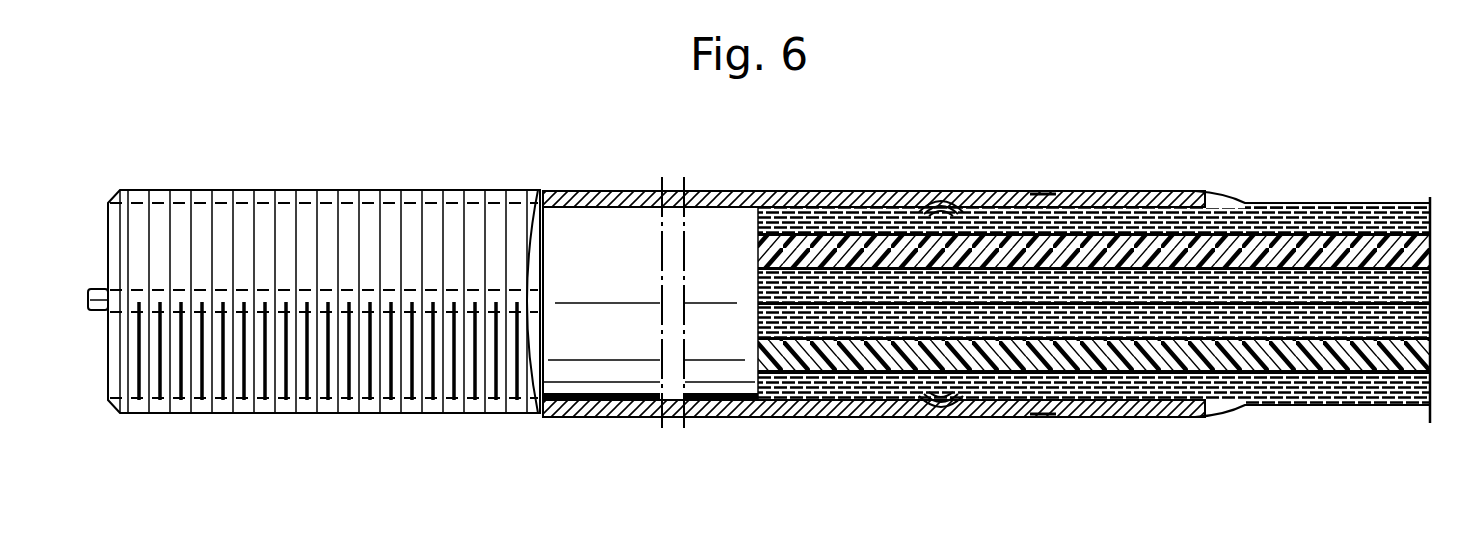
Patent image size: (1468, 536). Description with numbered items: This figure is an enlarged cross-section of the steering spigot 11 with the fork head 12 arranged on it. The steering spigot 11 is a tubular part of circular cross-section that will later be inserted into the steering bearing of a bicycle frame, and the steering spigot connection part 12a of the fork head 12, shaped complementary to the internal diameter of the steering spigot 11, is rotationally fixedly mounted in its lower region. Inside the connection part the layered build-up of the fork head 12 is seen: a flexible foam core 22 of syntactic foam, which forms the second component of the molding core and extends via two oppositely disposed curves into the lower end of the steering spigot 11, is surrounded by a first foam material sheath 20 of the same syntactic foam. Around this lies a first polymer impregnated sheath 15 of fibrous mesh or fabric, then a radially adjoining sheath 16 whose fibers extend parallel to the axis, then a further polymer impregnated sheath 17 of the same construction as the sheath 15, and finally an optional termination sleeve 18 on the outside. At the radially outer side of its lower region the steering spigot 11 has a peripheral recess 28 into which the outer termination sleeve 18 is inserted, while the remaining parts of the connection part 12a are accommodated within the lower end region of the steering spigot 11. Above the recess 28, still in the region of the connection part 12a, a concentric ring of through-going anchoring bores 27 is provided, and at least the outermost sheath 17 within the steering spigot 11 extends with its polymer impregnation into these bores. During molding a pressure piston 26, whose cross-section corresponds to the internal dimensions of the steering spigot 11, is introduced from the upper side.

The steering spigot 11 is at (518, 178).
The fork head 12 is at (1247, 188).
The steering spigot connection part 12a is at (880, 158).
The first polymer impregnated sheath 15 is at (1377, 310).
The sheath 16 is at (1340, 290).
The sheath 17 is at (1300, 262).
The termination sleeve 18 is at (1073, 192).
The first foam material sheath 20 is at (1413, 303).
The flexible foam core 22 is at (1118, 253).
The pressure piston 26 is at (603, 400).
The anchoring bores 27 is at (926, 192).
The peripheral recess 28 is at (1043, 192).